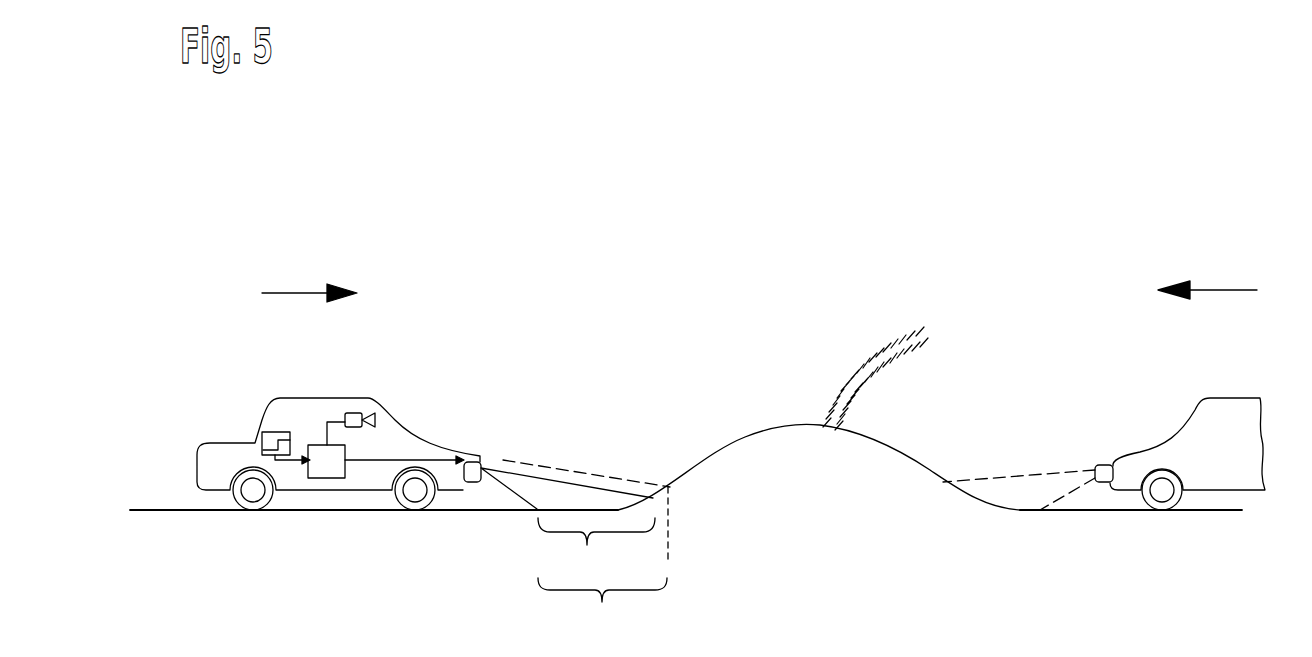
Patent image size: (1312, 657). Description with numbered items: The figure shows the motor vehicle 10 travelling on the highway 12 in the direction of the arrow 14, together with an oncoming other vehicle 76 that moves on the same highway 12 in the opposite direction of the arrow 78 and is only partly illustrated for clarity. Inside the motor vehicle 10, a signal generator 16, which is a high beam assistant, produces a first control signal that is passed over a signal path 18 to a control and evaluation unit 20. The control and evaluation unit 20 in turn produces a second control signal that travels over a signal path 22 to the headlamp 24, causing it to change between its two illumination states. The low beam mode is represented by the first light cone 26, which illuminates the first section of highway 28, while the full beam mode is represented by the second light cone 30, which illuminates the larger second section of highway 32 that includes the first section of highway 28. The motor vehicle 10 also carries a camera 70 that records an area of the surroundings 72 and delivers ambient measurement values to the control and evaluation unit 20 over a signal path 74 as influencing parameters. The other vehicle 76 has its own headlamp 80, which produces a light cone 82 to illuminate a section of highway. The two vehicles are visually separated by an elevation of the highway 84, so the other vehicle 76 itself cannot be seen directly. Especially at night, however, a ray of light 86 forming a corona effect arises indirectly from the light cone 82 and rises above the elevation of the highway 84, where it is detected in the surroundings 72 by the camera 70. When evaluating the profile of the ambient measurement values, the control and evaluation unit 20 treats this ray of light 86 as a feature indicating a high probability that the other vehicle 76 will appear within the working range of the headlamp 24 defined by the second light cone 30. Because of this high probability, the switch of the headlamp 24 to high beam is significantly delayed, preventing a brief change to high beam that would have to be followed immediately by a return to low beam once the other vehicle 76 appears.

The motor vehicle 10 is at (292, 397).
The highway 12 is at (165, 511).
The arrow 14 is at (292, 292).
The signal generator 16 is at (262, 438).
The signal path 18 is at (290, 460).
The control and evaluation unit 20 is at (324, 479).
The signal path 22 is at (390, 462).
The headlamp 24 is at (481, 468).
The first light cone 26 is at (527, 472).
The first section of highway 28 is at (603, 533).
The second light cone 30 is at (603, 478).
The second section of highway 32 is at (602, 606).
The camera 70 is at (362, 411).
The surroundings 72 is at (474, 270).
The signal path 74 is at (335, 421).
The other vehicle 76 is at (1232, 397).
The arrow 78 is at (1226, 289).
The headlamp 80 is at (1100, 462).
The light cone 82 is at (1021, 478).
The elevation of the highway 84 is at (758, 380).
The ray of light 86 is at (952, 319).